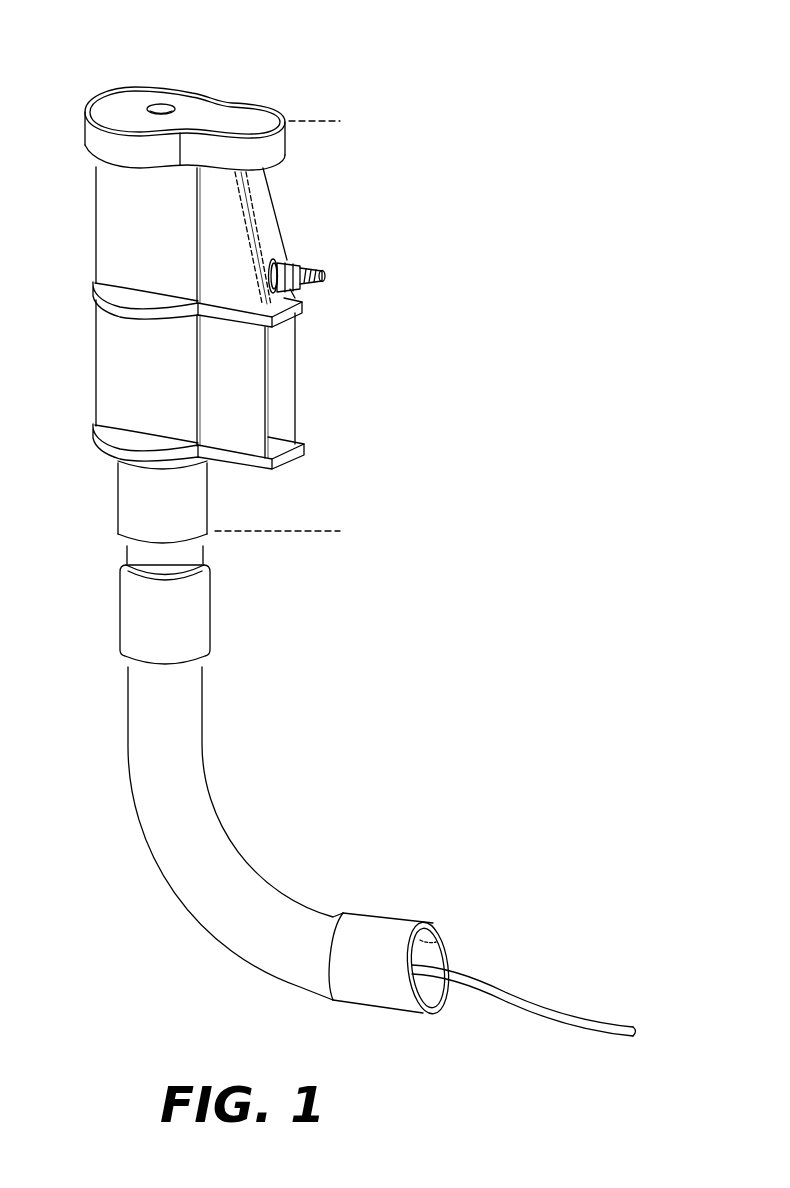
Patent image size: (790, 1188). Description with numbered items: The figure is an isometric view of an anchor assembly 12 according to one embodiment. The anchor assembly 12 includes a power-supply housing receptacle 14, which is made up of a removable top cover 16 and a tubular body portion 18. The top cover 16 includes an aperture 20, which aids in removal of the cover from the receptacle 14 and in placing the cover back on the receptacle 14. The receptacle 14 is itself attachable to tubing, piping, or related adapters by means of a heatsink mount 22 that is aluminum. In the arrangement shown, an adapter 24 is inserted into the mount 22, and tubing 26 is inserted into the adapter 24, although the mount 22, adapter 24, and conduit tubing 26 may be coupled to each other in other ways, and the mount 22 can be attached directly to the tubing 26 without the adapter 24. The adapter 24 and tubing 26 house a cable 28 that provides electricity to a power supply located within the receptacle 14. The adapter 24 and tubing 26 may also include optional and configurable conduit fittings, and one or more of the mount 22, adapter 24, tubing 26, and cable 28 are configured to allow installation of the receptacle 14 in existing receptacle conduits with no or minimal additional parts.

The anchor assembly 12 is at (399, 178).
The power-supply housing receptacle 14 is at (340, 121).
The removable top cover 16 is at (242, 120).
The tubular body portion 18 is at (68, 106).
The aperture 20 is at (164, 102).
The heatsink mount 22 is at (147, 497).
The adapter 24 is at (140, 552).
The tubing 26 is at (173, 817).
The cable 28 is at (537, 1003).